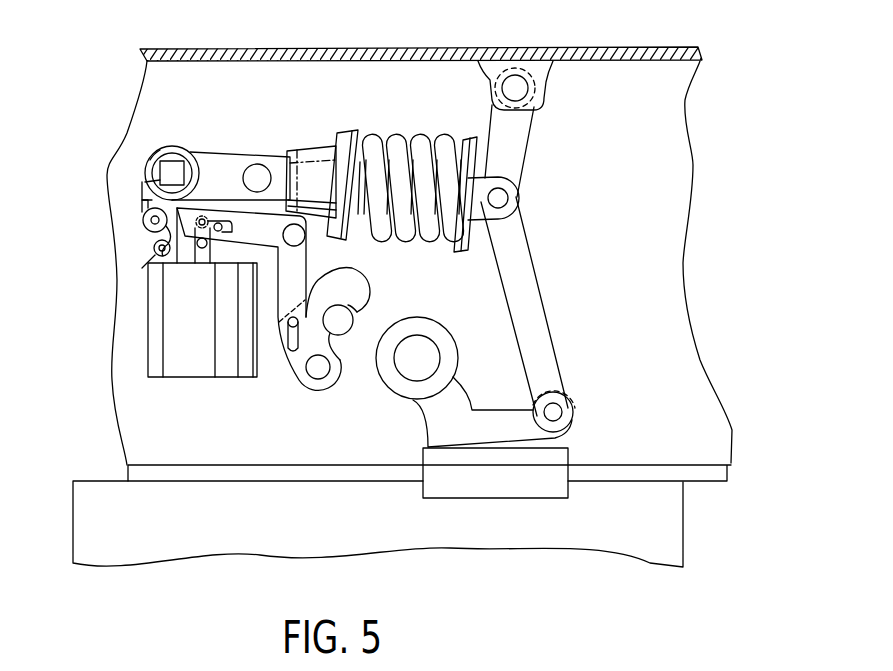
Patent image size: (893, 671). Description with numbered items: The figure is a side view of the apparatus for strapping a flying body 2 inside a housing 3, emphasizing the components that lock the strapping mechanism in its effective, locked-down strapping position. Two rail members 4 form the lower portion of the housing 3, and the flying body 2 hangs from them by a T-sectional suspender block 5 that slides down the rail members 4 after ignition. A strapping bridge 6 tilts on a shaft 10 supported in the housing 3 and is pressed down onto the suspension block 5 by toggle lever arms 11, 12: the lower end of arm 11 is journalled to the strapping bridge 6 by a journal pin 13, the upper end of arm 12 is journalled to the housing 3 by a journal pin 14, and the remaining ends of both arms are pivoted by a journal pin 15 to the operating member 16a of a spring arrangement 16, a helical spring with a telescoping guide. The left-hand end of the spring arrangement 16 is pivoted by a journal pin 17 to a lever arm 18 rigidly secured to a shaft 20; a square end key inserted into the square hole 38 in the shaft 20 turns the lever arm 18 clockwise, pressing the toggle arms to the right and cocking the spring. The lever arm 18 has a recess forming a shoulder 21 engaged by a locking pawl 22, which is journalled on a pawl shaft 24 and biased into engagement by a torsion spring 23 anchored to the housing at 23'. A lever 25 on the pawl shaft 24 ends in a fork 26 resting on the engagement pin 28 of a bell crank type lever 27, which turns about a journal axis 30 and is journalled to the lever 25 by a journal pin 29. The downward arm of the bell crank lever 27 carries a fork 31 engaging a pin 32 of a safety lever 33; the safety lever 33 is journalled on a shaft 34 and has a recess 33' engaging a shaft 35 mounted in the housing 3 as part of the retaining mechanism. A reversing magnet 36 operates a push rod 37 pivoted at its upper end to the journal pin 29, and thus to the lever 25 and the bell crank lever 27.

The flying body 2 is at (104, 501).
The housing 3 is at (383, 52).
The rail members 4 is at (695, 473).
The suspender block 5 is at (506, 457).
The strapping bridge 6 is at (467, 427).
The shaft 10 is at (417, 383).
The toggle lever arm 11 is at (537, 318).
The toggle lever arm 12 is at (515, 155).
The journal pin 13 is at (553, 413).
The journal pin 14 is at (517, 88).
The journal pin 15 is at (497, 198).
The spring arrangement 16 is at (387, 177).
The operating member 16a is at (477, 213).
The journal pin 17 is at (258, 176).
The lever arm 18 is at (203, 160).
The shaft 20 is at (169, 168).
The shoulder 21 is at (142, 182).
The locking pawl 22 is at (148, 202).
The torsion spring 23 is at (119, 272).
The anchoring point 23' is at (144, 272).
The pawl shaft 24 is at (157, 223).
The lever 25 is at (182, 230).
The fork 26 is at (207, 213).
The bell crank type lever 27 is at (300, 268).
The engagement pin 28 is at (219, 230).
The journal pin 29 is at (202, 217).
The journal axis 30 is at (295, 235).
The fork 31 is at (287, 348).
The pin 32 is at (292, 327).
The safety lever 33 is at (364, 293).
The recess 33' is at (373, 317).
The shaft 34 is at (318, 368).
The shaft 35 is at (343, 325).
The reversing magnet 36 is at (203, 356).
The push rod 37 is at (203, 262).
The square hole 38 is at (157, 157).